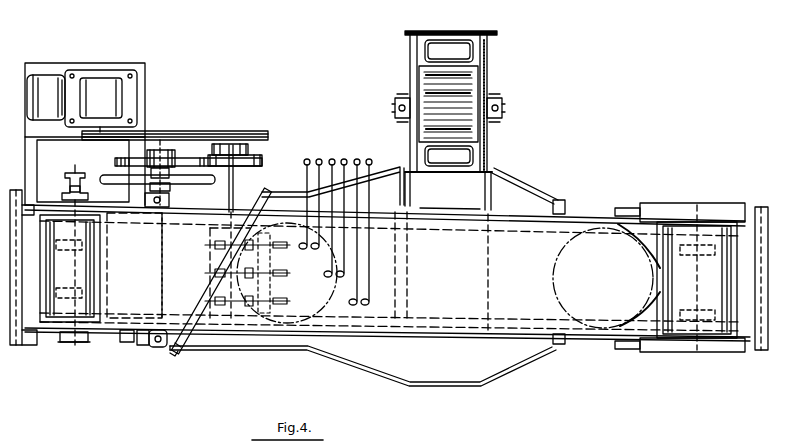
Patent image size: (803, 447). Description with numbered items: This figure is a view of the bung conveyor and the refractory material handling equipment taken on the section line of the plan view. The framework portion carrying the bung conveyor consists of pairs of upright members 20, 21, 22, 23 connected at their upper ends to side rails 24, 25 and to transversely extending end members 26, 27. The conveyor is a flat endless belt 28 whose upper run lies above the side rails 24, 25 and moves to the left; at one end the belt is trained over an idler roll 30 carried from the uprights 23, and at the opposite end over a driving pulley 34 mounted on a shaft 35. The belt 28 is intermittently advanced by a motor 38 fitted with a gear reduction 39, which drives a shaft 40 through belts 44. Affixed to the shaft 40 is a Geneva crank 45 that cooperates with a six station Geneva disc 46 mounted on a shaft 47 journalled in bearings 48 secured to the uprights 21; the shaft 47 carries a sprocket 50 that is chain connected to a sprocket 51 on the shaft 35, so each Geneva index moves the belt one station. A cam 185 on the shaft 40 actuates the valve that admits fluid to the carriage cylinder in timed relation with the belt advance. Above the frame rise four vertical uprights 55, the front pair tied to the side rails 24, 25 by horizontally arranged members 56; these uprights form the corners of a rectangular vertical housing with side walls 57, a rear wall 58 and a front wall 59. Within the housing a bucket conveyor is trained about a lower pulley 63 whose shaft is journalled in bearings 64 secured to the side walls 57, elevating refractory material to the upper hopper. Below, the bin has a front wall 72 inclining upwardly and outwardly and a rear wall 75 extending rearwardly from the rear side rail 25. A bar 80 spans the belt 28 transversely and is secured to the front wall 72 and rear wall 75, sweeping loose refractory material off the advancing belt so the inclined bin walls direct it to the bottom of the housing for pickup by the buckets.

The upright member 20 is at (32, 205).
The upright member 21 is at (128, 342).
The upright member 22 is at (566, 207).
The upright member 23 is at (742, 352).
The side rail 24 is at (352, 329).
The side rail 25 is at (418, 210).
The end member 26 is at (14, 346).
The end member 27 is at (758, 350).
The conveyor belt 28 is at (580, 276).
The idler roll 30 is at (722, 222).
The driving pulley 34 is at (97, 279).
The shaft 35 is at (74, 174).
The motor 38 is at (48, 72).
The gear reduction 39 is at (95, 88).
The shaft 40 is at (235, 178).
The belts 44 is at (165, 131).
The Geneva crank 45 is at (256, 157).
The Geneva disc 46 is at (118, 160).
The shaft 47 is at (165, 242).
The bearings 48 is at (157, 208).
The sprocket 50 is at (120, 184).
The sprocket 51 is at (68, 182).
The vertical uprights 55 is at (408, 35).
The horizontally arranged members 56 is at (402, 191).
The side walls 57 is at (409, 55).
The rear wall 58 is at (426, 31).
The front wall 59 is at (448, 174).
The lower pulley 63 is at (465, 84).
The bearings 64 is at (398, 98).
The front wall 72 is at (420, 380).
The rear wall 75 is at (282, 190).
The bar 80 is at (190, 350).
The cam 185 is at (210, 300).